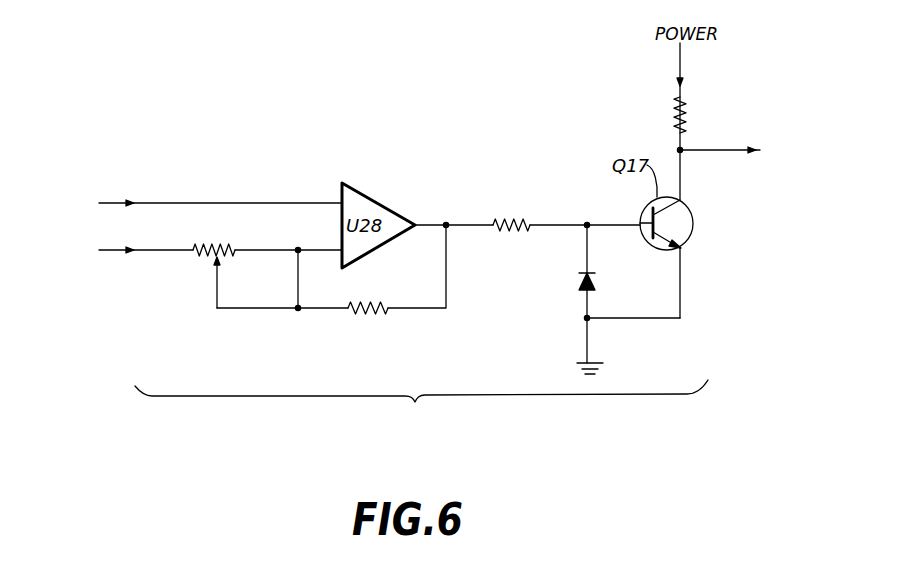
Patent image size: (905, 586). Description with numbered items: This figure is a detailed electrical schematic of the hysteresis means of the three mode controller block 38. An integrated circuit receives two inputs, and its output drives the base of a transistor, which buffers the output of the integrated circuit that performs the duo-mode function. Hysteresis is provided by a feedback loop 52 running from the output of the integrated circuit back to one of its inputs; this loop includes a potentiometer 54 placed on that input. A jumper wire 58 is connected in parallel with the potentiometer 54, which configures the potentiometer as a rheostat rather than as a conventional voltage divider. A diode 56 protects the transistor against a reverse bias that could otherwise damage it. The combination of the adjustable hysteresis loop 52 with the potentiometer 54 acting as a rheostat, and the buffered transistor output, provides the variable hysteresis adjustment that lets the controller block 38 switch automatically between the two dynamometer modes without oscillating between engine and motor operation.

The feedback loop 52 is at (423, 308).
The potentiometer 54 is at (207, 258).
The diode 56 is at (580, 283).
The jumper wire 58 is at (298, 285).
The three mode controller block 38 is at (421, 404).